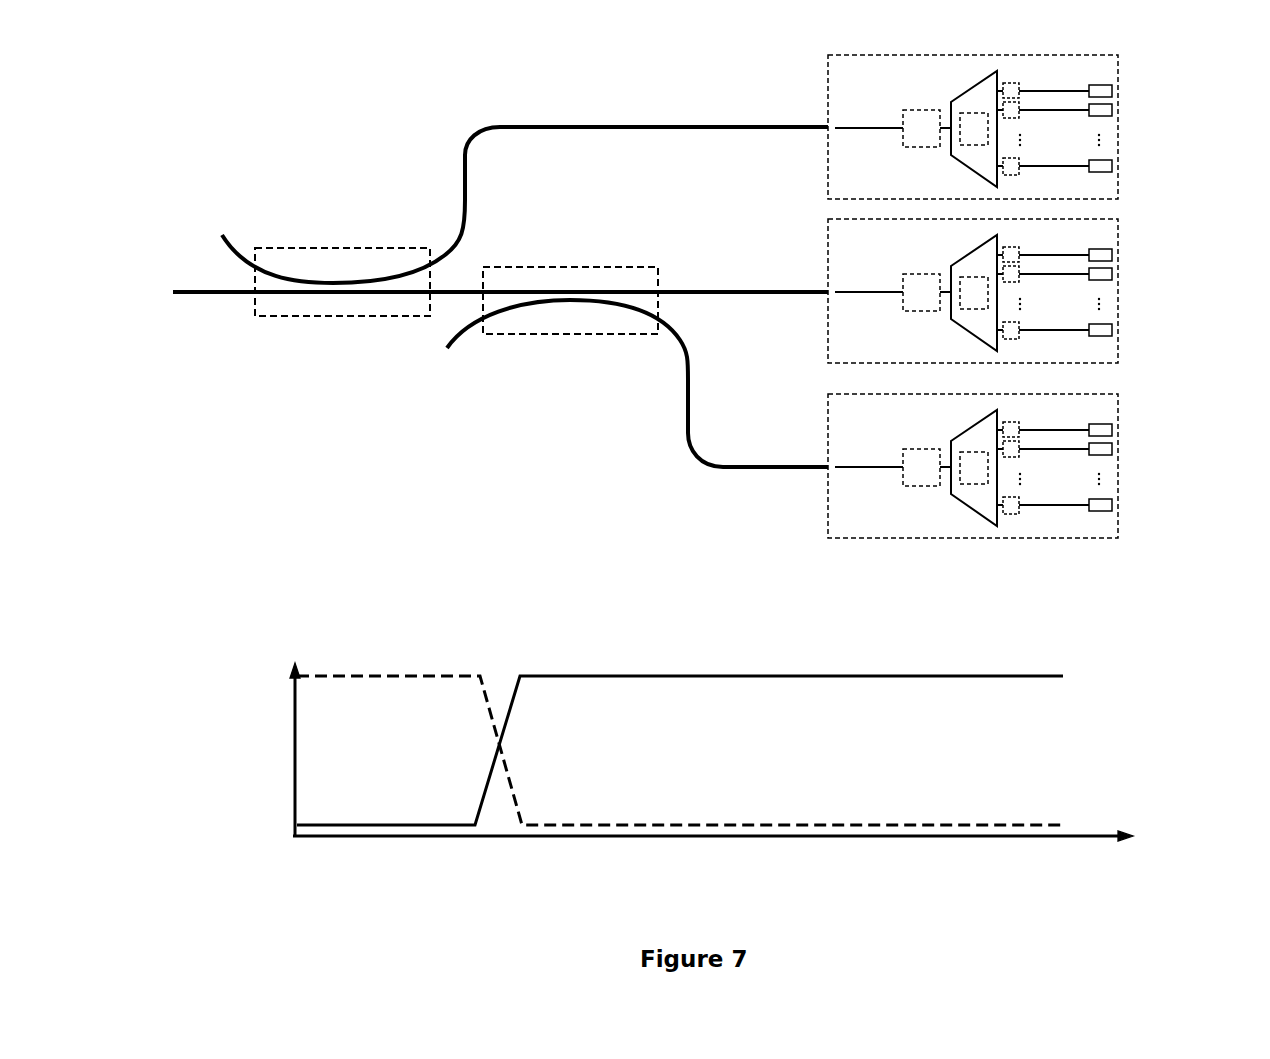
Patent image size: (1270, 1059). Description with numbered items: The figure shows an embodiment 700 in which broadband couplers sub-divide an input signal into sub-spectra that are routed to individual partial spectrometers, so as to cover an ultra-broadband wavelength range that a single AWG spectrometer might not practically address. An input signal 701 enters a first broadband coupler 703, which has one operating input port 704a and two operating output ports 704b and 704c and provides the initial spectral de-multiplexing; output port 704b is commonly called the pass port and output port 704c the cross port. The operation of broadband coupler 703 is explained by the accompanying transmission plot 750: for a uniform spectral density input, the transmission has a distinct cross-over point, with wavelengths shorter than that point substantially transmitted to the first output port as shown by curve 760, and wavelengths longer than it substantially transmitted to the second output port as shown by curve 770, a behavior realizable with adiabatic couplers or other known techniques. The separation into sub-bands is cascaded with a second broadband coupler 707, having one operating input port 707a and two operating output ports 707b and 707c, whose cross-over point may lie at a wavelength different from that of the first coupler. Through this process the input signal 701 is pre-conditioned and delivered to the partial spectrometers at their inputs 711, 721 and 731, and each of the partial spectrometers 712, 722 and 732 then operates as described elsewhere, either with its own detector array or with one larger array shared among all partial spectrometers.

The embodiment with cascaded broadband couplers 700 is at (220, 100).
The input signal 701 is at (193, 288).
The broadband coupler 703 is at (343, 247).
The operating input port 704a is at (287, 295).
The operating output port (pass port) 704b is at (331, 312).
The operating output port (cross port) 704c is at (332, 290).
The second broadband coupler 707 is at (570, 335).
The operating input port 707a is at (495, 288).
The operating output port 707b is at (578, 283).
The operating output port 707c is at (578, 316).
The partial spectrometer input 711 is at (792, 123).
The partial spectrometer 712 is at (1122, 127).
The partial spectrometer input 721 is at (802, 288).
The partial spectrometer 722 is at (1122, 291).
The partial spectrometer input 731 is at (810, 462).
The partial spectrometer 732 is at (1122, 466).
The transmission plot 750 is at (285, 627).
The curve 760 is at (435, 673).
The curve 770 is at (662, 675).